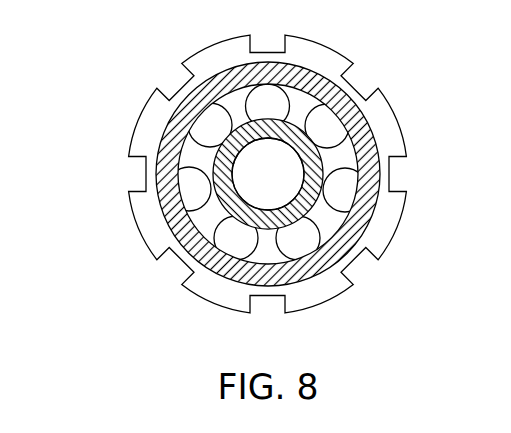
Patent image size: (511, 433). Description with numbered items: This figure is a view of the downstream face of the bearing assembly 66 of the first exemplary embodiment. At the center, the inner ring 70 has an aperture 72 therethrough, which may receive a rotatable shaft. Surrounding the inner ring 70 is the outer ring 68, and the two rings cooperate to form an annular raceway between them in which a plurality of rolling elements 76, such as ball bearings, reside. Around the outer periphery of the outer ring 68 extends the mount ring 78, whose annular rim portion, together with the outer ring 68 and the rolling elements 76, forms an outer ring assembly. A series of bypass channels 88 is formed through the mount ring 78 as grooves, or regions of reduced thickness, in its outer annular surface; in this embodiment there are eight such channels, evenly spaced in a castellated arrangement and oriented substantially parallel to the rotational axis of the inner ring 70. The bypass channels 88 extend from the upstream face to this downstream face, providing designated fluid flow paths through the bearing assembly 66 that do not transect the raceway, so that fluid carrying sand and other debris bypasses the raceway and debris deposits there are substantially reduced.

The bearing assembly 66 is at (293, 180).
The outer ring 68 is at (373, 145).
The inner ring 70 is at (305, 203).
The aperture 72 is at (252, 187).
The rolling elements 76 is at (253, 110).
The mount ring 78 is at (396, 206).
The bypass channels 88 is at (265, 40).